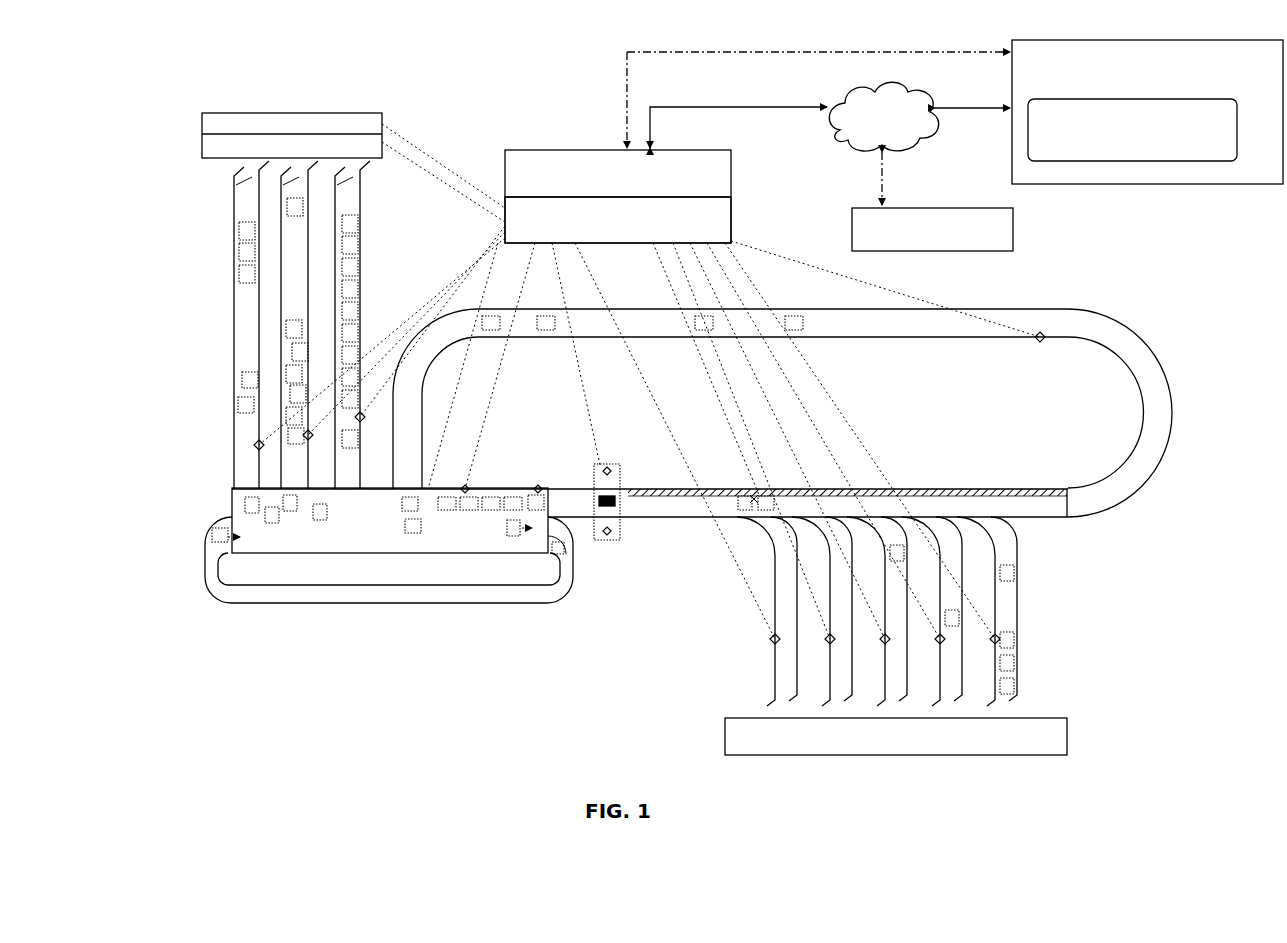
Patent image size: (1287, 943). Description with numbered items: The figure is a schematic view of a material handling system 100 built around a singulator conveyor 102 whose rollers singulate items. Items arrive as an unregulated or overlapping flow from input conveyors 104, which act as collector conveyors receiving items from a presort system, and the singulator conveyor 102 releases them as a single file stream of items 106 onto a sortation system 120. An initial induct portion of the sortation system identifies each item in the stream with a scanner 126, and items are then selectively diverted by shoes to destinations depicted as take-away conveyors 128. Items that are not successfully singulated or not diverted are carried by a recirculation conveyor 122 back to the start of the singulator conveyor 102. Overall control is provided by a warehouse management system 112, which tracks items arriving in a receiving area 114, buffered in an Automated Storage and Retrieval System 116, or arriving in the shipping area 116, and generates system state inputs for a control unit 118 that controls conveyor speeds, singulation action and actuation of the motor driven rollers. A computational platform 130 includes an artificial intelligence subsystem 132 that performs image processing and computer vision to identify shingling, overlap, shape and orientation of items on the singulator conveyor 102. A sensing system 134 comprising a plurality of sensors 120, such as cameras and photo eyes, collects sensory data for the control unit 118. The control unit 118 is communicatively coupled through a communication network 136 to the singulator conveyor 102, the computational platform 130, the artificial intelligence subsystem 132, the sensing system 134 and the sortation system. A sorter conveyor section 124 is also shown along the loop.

The material handling system 100 is at (92, 76).
The singulator conveyor 102 is at (232, 512).
The input conveyors 104 is at (280, 323).
The items 106 is at (538, 486).
The warehouse management system 112 is at (733, 176).
The receiving area 114 is at (384, 123).
The Automated Storage and Retrieval System 116 is at (214, 160).
The control unit 118 is at (733, 224).
The sensors 120 is at (362, 420).
The recirculation conveyor 122 is at (975, 309).
The sorter conveyor 124 is at (1010, 489).
The scanner 126 is at (603, 462).
The take-away conveyors 128 is at (760, 548).
The computational platform 130 is at (1147, 112).
The artificial intelligence subsystem 132 is at (1132, 130).
The sensing system 134 is at (932, 229).
The communication network 136 is at (818, 117).